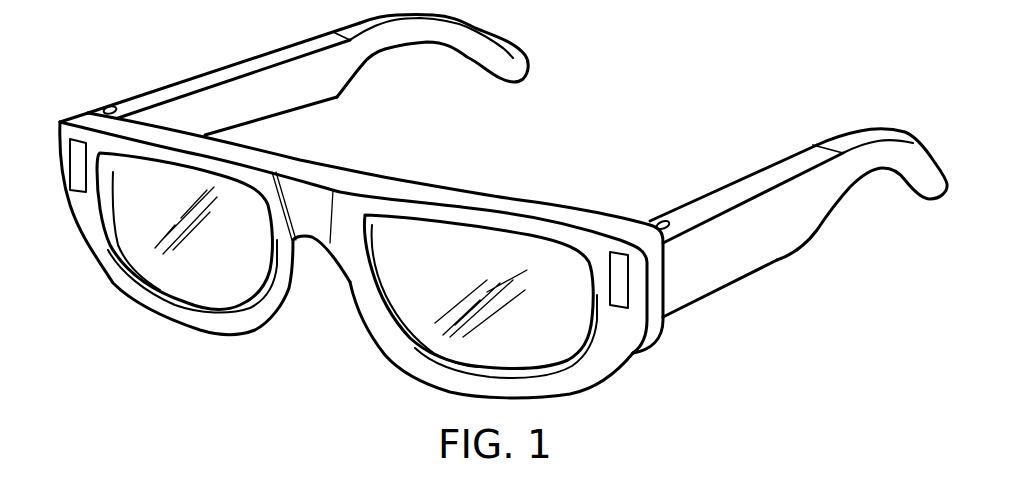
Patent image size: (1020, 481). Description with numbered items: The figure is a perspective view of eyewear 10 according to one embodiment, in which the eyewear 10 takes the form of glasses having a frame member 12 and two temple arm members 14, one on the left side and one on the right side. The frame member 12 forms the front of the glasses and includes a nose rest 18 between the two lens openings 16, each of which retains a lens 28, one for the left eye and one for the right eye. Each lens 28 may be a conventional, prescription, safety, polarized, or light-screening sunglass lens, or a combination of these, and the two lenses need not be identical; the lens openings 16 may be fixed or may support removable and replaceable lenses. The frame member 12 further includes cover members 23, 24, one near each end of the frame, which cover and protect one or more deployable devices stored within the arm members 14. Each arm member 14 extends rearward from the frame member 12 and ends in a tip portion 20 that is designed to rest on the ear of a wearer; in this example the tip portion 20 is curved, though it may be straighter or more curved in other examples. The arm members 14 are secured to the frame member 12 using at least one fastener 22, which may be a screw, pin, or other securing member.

The eyewear 10 is at (864, 78).
The frame member 12 is at (153, 307).
The temple arm members 14 is at (333, 97).
The lens openings 16 is at (106, 252).
The nose rest 18 is at (290, 293).
The tip portion 20 is at (427, 43).
The fastener 22 is at (110, 106).
The cover member 23 is at (620, 252).
The cover member 24 is at (82, 137).
The lens 28 is at (206, 253).